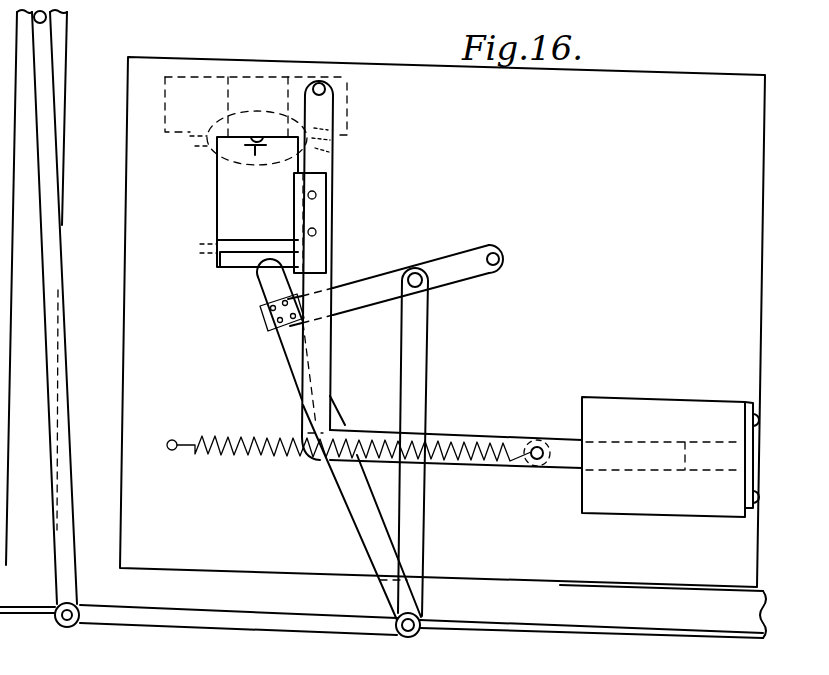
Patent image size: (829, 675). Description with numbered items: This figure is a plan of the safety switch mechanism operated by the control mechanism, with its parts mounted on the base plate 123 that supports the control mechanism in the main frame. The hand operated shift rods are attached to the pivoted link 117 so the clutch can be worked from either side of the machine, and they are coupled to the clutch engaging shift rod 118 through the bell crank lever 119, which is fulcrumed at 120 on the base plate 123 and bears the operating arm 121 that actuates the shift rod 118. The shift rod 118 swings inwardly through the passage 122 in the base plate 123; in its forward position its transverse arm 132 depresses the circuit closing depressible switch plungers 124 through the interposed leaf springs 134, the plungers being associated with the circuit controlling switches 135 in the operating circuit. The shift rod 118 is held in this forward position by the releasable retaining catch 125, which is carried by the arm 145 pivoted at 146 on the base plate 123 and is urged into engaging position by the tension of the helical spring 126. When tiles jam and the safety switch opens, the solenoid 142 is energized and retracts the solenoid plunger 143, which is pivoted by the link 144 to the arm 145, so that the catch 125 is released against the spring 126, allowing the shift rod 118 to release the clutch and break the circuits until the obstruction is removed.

The pivoted link 117 is at (57, 251).
The clutch engaging shift rod 118 is at (240, 258).
The bell crank lever 119 is at (424, 383).
The fulcrum 120 is at (417, 268).
The operating arm 121 is at (363, 533).
The passage 122 is at (217, 197).
The base plate 123 is at (442, 322).
The switch plungers 124 is at (257, 134).
The retaining catch 125 is at (326, 196).
The helical spring 126 is at (229, 440).
The transverse arm 132 is at (216, 250).
The leaf springs 134 is at (284, 161).
The circuit controlling switches 135 is at (290, 75).
The solenoid 142 is at (644, 508).
The solenoid plunger 143 is at (557, 465).
The link 144 is at (332, 460).
The arm 145 is at (322, 338).
The pivot 146 is at (334, 91).